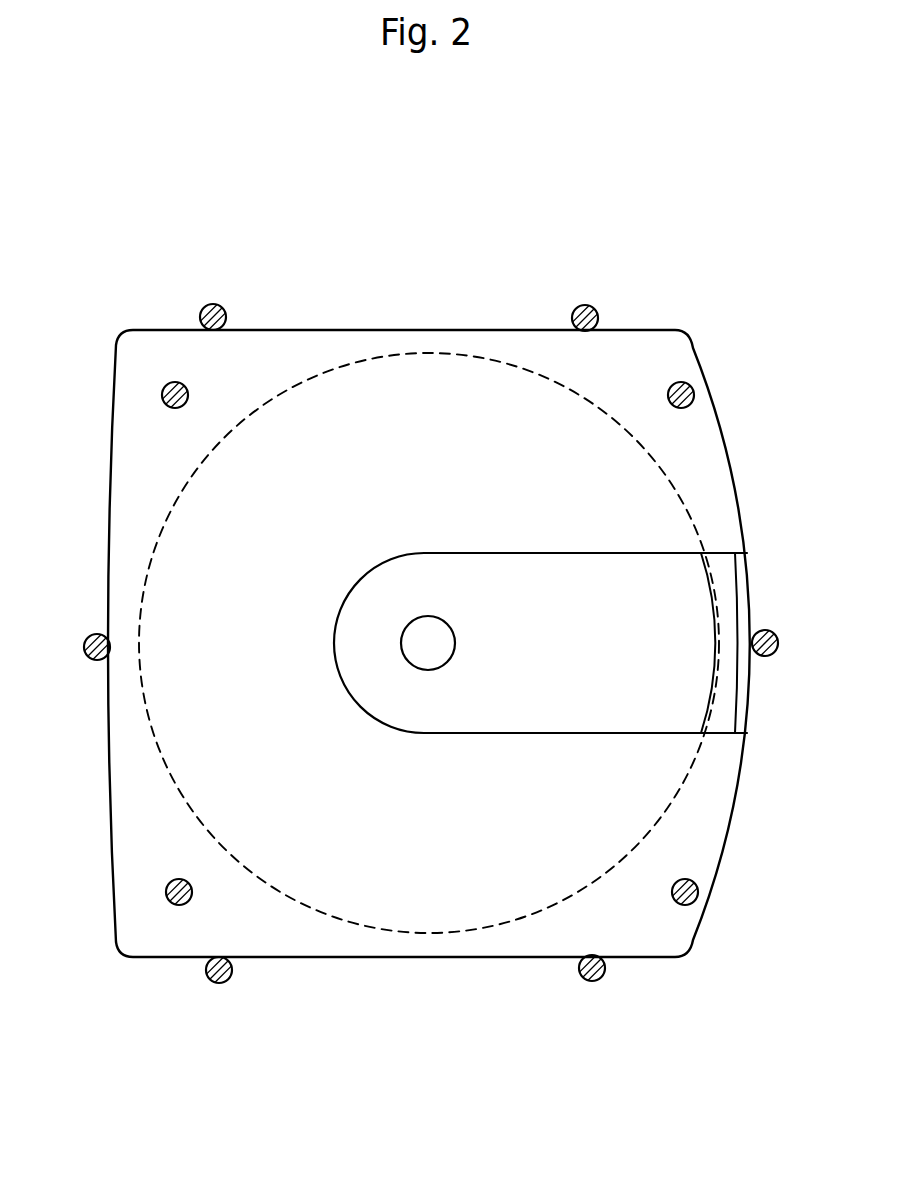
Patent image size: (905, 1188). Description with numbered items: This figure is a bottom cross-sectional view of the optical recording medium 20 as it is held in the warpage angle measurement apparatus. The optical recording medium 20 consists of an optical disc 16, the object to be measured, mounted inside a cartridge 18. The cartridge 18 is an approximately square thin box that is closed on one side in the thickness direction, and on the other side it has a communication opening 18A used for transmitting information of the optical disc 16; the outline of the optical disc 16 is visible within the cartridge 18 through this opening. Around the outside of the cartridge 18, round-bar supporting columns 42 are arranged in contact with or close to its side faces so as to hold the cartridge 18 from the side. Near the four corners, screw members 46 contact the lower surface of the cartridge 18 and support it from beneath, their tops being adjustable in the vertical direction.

The optical recording medium 20 is at (403, 218).
The cartridge 18 is at (403, 329).
The communication opening 18A is at (472, 553).
The optical disc 16 is at (662, 462).
The supporting column 42 is at (218, 304).
The screw member 46 is at (162, 392).